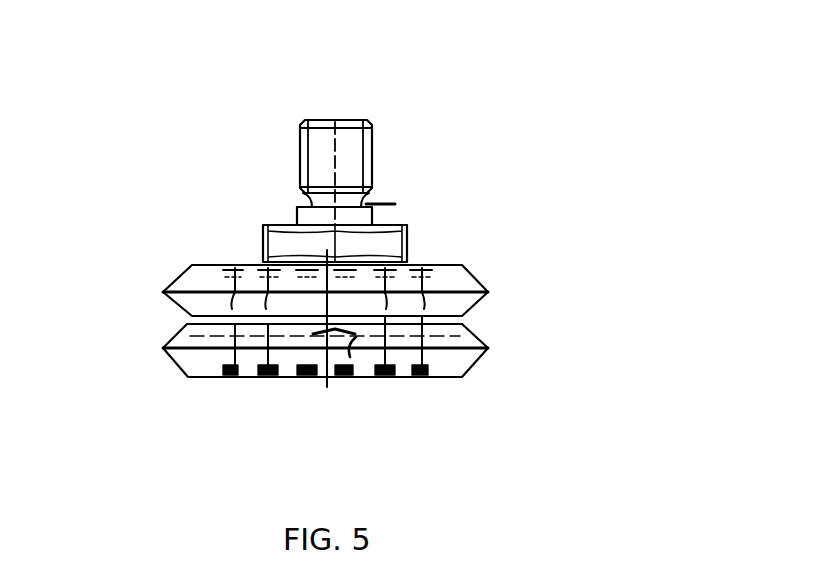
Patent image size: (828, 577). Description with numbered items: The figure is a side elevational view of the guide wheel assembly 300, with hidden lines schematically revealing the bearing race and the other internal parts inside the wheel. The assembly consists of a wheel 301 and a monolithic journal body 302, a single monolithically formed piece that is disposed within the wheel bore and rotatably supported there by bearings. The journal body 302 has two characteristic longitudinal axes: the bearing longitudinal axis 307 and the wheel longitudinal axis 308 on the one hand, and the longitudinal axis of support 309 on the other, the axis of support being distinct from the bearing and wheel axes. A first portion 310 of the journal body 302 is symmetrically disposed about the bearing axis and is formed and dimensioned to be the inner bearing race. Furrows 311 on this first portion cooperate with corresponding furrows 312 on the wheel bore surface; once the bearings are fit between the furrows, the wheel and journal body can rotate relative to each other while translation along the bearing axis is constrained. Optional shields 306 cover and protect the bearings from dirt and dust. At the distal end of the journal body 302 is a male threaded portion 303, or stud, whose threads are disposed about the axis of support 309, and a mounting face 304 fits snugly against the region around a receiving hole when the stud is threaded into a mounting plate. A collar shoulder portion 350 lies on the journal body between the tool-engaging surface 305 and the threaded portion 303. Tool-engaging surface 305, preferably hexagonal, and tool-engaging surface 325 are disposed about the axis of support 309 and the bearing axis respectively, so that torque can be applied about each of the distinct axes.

The guide wheel assembly 300 is at (625, 133).
The wheel 301 is at (467, 372).
The monolithic journal body 302 is at (322, 118).
The male threaded portion 303 is at (318, 155).
The mounting face 304 is at (390, 226).
The tool-engaging surface 305 is at (407, 243).
The shields 306 is at (233, 265).
The bearing longitudinal axis 307 is at (327, 387).
The wheel longitudinal axis 308 is at (312, 405).
The longitudinal axis of support 309 is at (336, 122).
The first portion of the journal body 310 is at (408, 324).
The furrows on the journal body 311 is at (268, 333).
The furrows on the wheel bore surface 312 is at (227, 340).
The tool-engaging surface 325 is at (345, 357).
The collar shoulder portion 350 is at (378, 206).